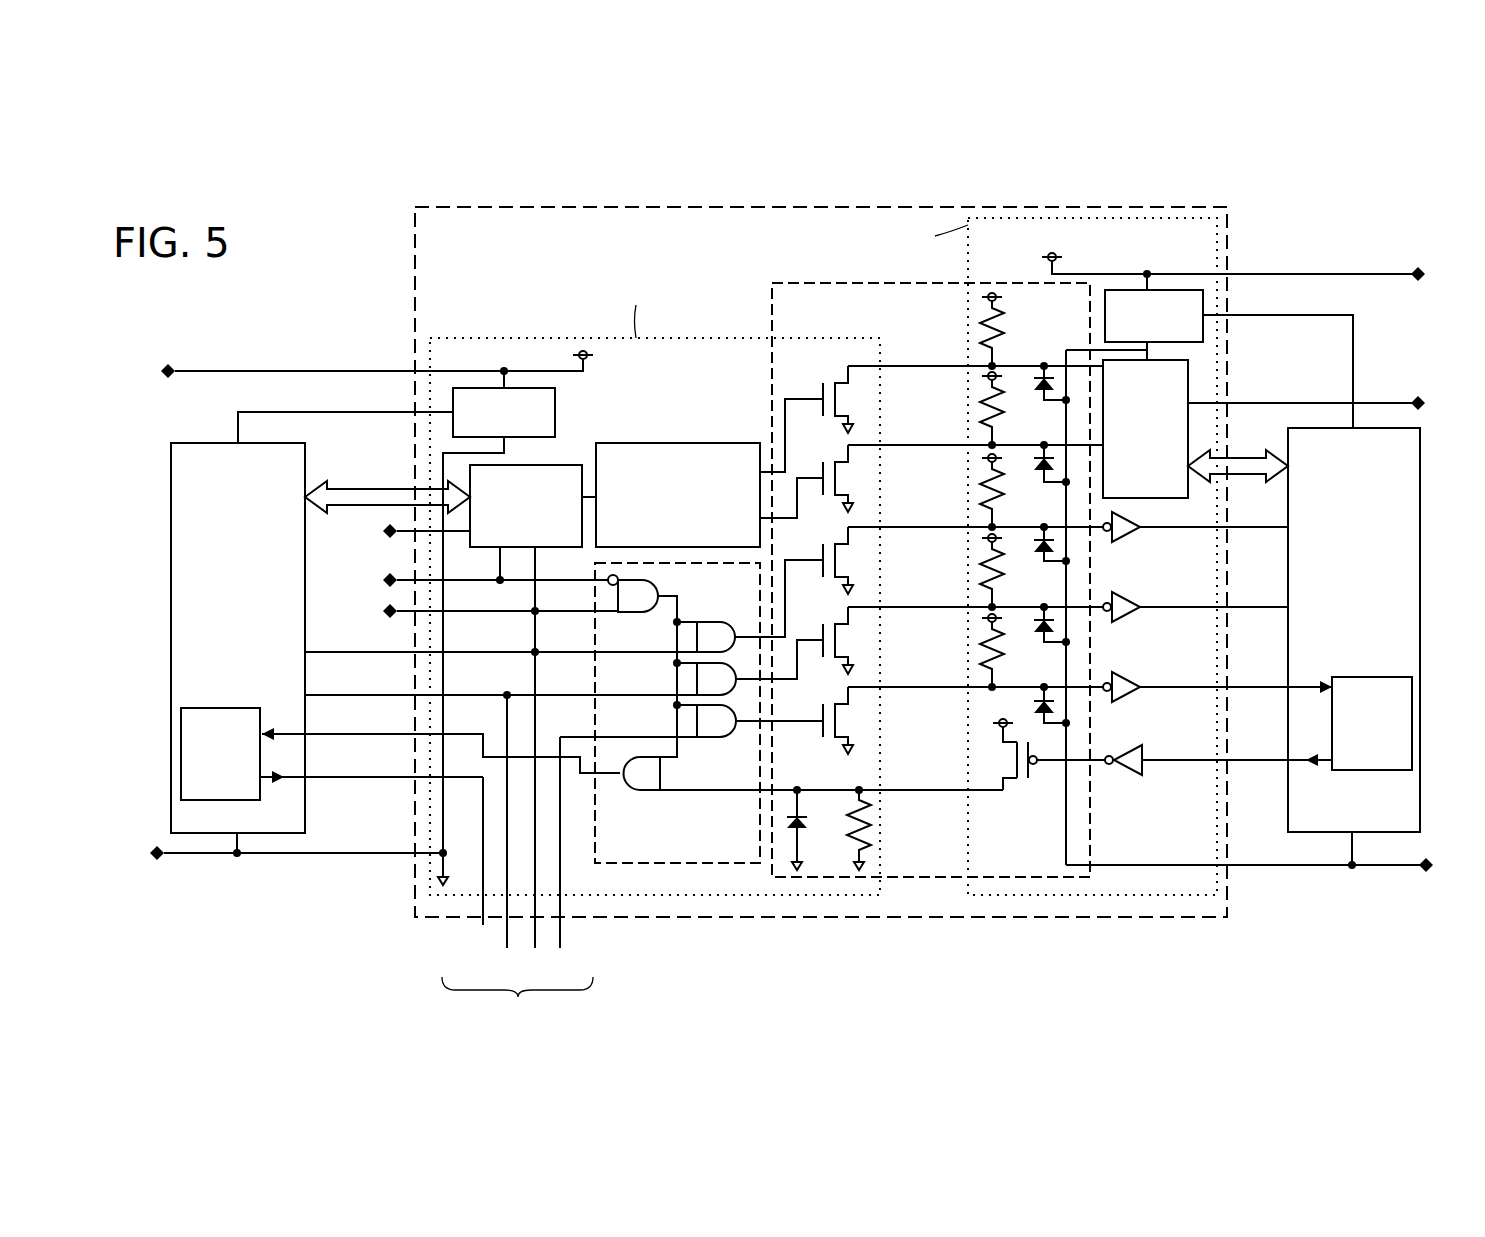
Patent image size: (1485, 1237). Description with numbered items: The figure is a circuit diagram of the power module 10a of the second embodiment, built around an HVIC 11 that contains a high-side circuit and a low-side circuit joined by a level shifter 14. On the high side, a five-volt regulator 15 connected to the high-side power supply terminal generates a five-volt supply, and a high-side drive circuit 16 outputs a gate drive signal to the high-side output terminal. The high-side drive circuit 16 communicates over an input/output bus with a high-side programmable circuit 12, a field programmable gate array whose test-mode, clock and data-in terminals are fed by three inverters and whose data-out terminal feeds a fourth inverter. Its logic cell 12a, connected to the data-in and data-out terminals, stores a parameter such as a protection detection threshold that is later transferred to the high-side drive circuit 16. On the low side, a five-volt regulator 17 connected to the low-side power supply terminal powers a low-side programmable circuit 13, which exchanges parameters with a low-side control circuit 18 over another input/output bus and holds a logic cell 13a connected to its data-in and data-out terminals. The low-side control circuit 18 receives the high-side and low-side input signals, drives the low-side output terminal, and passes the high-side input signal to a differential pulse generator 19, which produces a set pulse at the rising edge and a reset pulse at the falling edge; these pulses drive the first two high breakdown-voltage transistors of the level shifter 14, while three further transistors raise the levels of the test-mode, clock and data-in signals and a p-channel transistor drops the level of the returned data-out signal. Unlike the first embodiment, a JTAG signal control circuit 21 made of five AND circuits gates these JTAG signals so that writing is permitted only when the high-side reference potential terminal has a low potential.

The power module 10a is at (1378, 200).
The HVIC 11 is at (536, 207).
The high-side programmable circuit 12 is at (1420, 465).
The logic cell 12a is at (1372, 677).
The low-side programmable circuit 13 is at (171, 490).
The logic cell 13a is at (228, 708).
The level shifter 14 is at (825, 283).
The 5V regulator 15 is at (1203, 333).
The high-side drive circuit 16 is at (1190, 375).
The 5V regulator 17 is at (555, 405).
The low-side control circuit 18 is at (540, 465).
The differential pulse generator 19 is at (697, 443).
The JTAG signal control circuit 21 is at (680, 863).